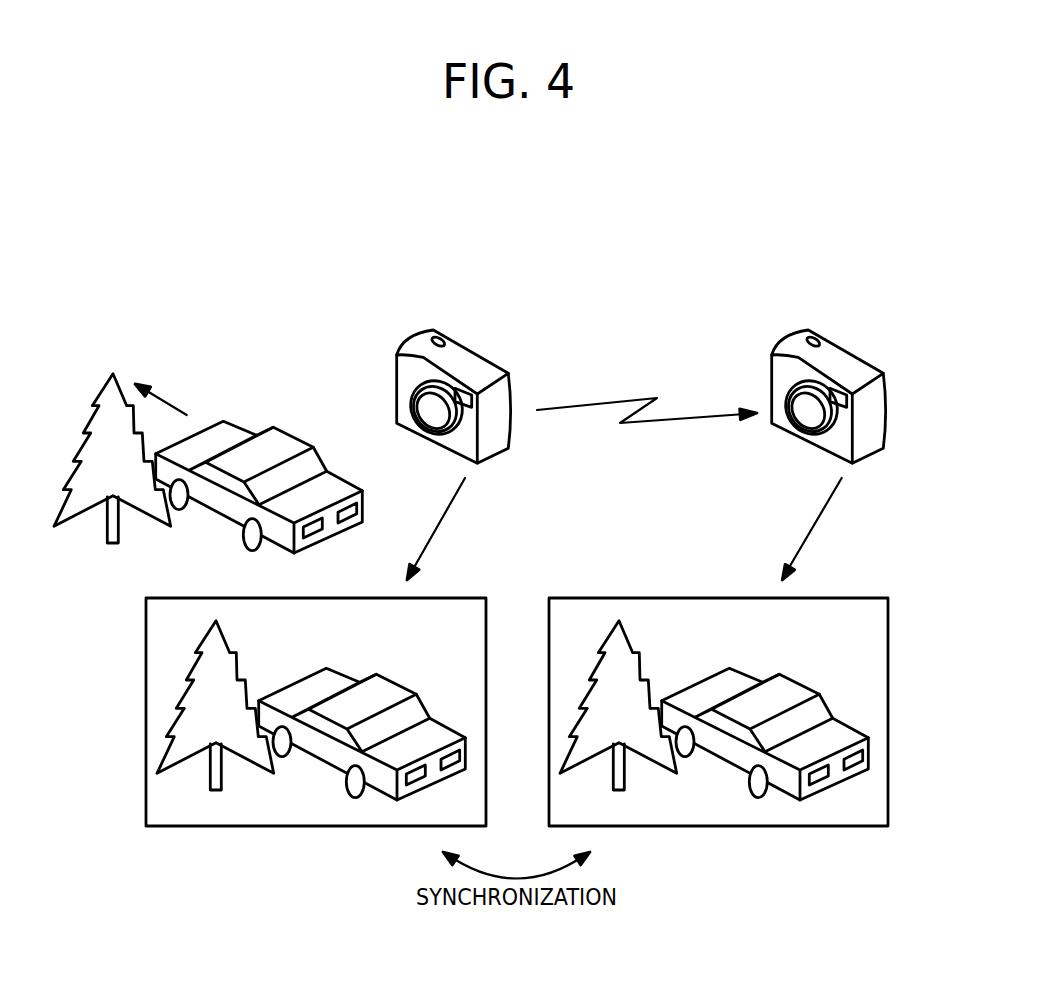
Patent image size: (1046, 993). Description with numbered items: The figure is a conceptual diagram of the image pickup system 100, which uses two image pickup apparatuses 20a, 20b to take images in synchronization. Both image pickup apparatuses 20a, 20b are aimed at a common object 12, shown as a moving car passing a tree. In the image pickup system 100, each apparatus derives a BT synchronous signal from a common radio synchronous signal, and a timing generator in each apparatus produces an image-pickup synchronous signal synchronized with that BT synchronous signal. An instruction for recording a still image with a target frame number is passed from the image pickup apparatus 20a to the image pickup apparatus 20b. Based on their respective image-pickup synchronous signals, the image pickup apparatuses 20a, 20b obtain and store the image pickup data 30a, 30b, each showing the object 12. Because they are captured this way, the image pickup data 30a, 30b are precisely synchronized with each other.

The image pickup system 100 is at (661, 256).
The object 12 is at (238, 354).
The image pickup apparatus 20a is at (456, 341).
The image pickup apparatus 20b is at (832, 341).
The image pickup data 30a is at (467, 596).
The image pickup data 30b is at (852, 596).